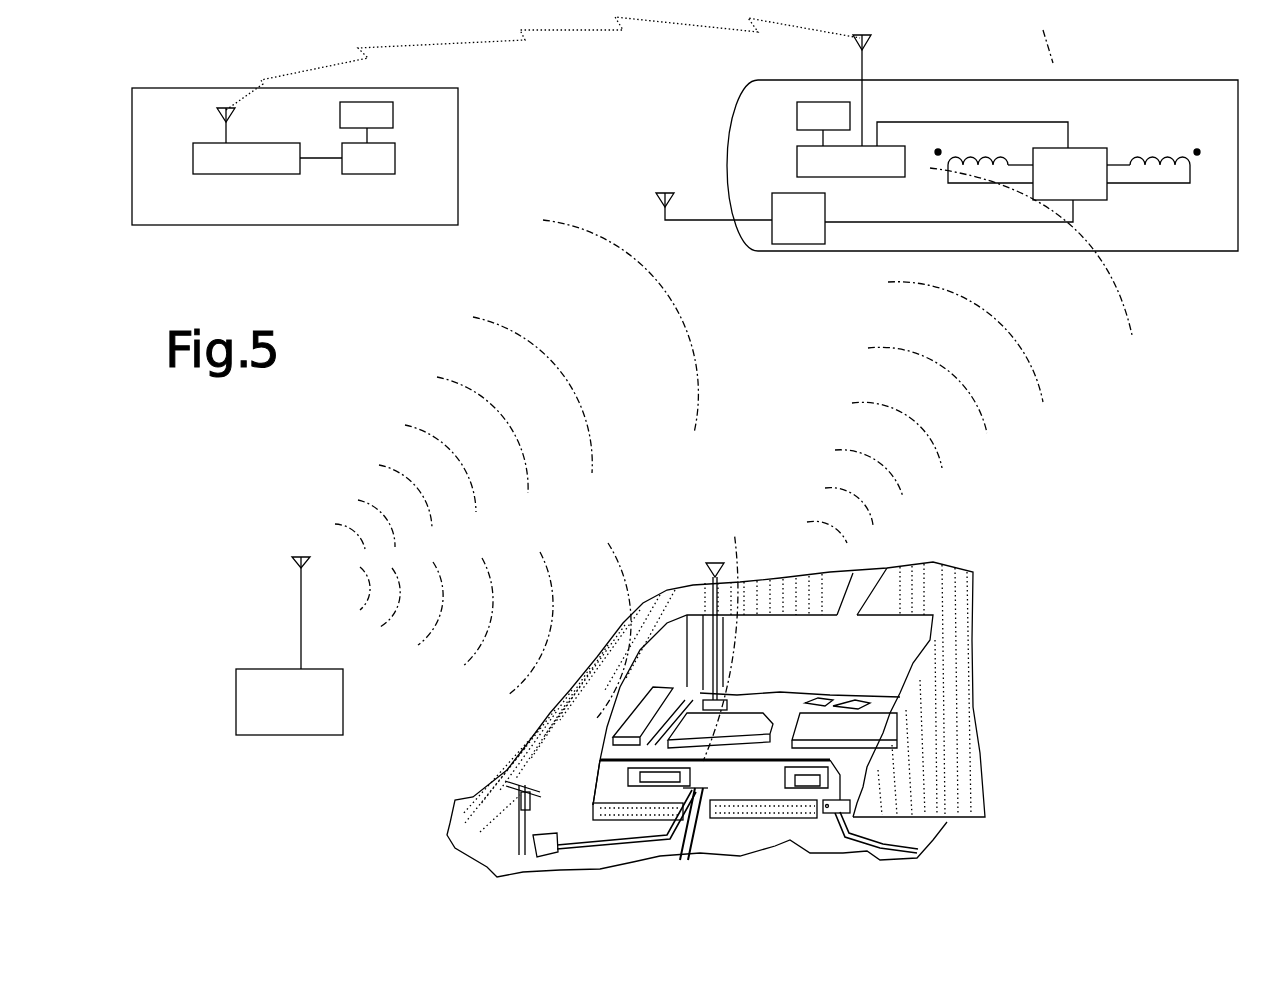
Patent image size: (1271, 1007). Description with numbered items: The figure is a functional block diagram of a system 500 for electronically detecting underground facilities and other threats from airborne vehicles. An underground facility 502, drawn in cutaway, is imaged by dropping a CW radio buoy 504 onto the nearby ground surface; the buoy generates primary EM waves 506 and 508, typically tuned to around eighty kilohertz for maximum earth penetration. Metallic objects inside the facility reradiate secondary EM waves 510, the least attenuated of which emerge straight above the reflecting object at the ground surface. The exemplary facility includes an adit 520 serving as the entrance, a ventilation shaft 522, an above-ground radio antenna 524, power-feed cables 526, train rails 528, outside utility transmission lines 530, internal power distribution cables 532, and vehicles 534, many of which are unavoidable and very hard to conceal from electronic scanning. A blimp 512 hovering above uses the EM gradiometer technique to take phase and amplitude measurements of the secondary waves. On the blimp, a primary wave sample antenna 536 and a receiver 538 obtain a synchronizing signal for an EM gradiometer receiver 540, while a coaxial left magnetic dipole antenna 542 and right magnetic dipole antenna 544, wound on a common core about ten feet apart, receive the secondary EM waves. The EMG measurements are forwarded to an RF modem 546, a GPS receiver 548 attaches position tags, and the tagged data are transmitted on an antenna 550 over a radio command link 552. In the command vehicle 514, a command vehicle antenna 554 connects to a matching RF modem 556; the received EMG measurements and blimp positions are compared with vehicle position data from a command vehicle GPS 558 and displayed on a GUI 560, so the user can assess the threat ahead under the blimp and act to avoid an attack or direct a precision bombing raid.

The system 500 is at (195, 452).
The underground facility 502 is at (741, 716).
The CW radio buoy 504 is at (236, 684).
The primary EM waves 506 is at (534, 640).
The primary EM waves 508 is at (486, 445).
The secondary EM waves 510 is at (967, 357).
The blimp 512 is at (1056, 80).
The command vehicle 514 is at (178, 88).
The adit 520 is at (700, 800).
The ventilation shaft 522 is at (877, 570).
The above-ground radio antenna 524 is at (708, 568).
The power-feed cables 526 is at (645, 845).
The train rails 528 is at (858, 850).
The outside utility transmission lines 530 is at (510, 783).
The internal power distribution cables 532 is at (650, 765).
The vehicles 534 is at (800, 702).
The primary wave sample antenna 536 is at (669, 199).
The receiver 538 is at (825, 238).
The EM gradiometer (EMG) receiver 540 is at (1087, 148).
The left magnetic dipole (LMD) antenna 542 is at (985, 153).
The right magnetic dipole (RMD) antenna 544 is at (1185, 148).
The RF modem 546 is at (797, 154).
The GPS receiver 548 is at (797, 110).
The antenna 550 is at (866, 42).
The radio command link 552 is at (368, 58).
The command vehicle antenna 554 is at (228, 116).
The RF modem 556 is at (193, 170).
The command vehicle GPS 558 is at (340, 112).
The GUI 560 is at (395, 160).